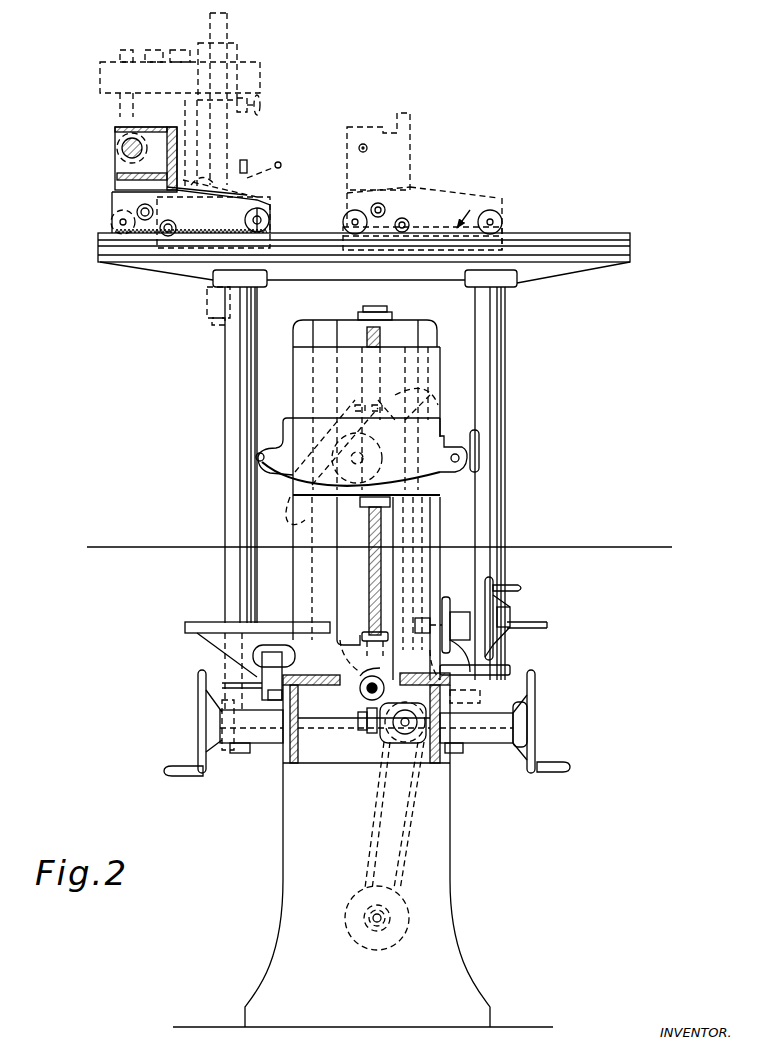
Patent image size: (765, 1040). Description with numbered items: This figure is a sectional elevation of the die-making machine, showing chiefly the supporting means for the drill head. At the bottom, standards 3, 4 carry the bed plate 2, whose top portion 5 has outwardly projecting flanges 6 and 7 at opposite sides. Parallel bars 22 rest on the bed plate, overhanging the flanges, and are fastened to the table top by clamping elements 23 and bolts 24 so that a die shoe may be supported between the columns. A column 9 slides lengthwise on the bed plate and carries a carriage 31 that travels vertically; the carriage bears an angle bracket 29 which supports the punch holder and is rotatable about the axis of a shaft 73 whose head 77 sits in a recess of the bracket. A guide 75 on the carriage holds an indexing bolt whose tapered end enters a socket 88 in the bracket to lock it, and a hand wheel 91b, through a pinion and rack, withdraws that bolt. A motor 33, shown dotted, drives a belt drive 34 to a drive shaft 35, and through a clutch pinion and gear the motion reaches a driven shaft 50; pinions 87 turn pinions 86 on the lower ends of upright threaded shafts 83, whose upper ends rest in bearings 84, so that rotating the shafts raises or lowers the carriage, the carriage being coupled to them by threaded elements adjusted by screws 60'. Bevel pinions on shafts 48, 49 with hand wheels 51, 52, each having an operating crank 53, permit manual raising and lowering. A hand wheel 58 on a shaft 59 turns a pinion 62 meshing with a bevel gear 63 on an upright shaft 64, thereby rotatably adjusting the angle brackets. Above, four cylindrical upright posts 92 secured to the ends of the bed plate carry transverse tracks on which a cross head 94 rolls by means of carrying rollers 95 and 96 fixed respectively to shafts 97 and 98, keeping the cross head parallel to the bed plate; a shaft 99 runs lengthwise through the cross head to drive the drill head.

The bed plate 2 is at (268, 790).
The standard 3 is at (107, 523).
The standard 4 is at (444, 886).
The top portion 5 is at (318, 765).
The flange 6 is at (257, 678).
The flange 7 is at (452, 678).
The column 9 is at (443, 330).
The parallel bar 22 is at (210, 622).
The clamping element 23 is at (262, 689).
The bolt 24 is at (270, 700).
The angle bracket 29 is at (286, 428).
The carriage 31 is at (322, 384).
The motor 33 is at (360, 950).
The belt drive 34 is at (374, 834).
The drive shaft 35 is at (405, 742).
The shaft 48 is at (466, 728).
The shaft 49 is at (222, 745).
The driven shaft 50 is at (395, 716).
The hand wheel 51 is at (535, 716).
The hand wheel 52 is at (197, 731).
The operating crank 53 is at (170, 776).
The hand wheel 58 is at (490, 611).
The shaft 59 is at (446, 612).
The bolt or screw 60' is at (363, 576).
The pinion 62 is at (424, 618).
The bevel gear 63 is at (452, 659).
The upright shaft 64 is at (412, 512).
The shaft 73 is at (292, 484).
The guide 75 is at (447, 436).
The head 77 is at (362, 438).
The upright threaded shaft 83 is at (380, 332).
The bearing 84 is at (390, 313).
The pinion 86 is at (360, 646).
The pinion 87 is at (360, 680).
The socket 88 is at (256, 457).
The hand wheel 91b is at (480, 440).
The upright post 92 is at (232, 381).
The cross head 94 is at (113, 162).
The carrying roller 95 is at (112, 212).
The carrying roller 96 is at (265, 212).
The shaft 97 is at (120, 225).
The shaft 98 is at (262, 220).
The shaft 99 is at (122, 146).